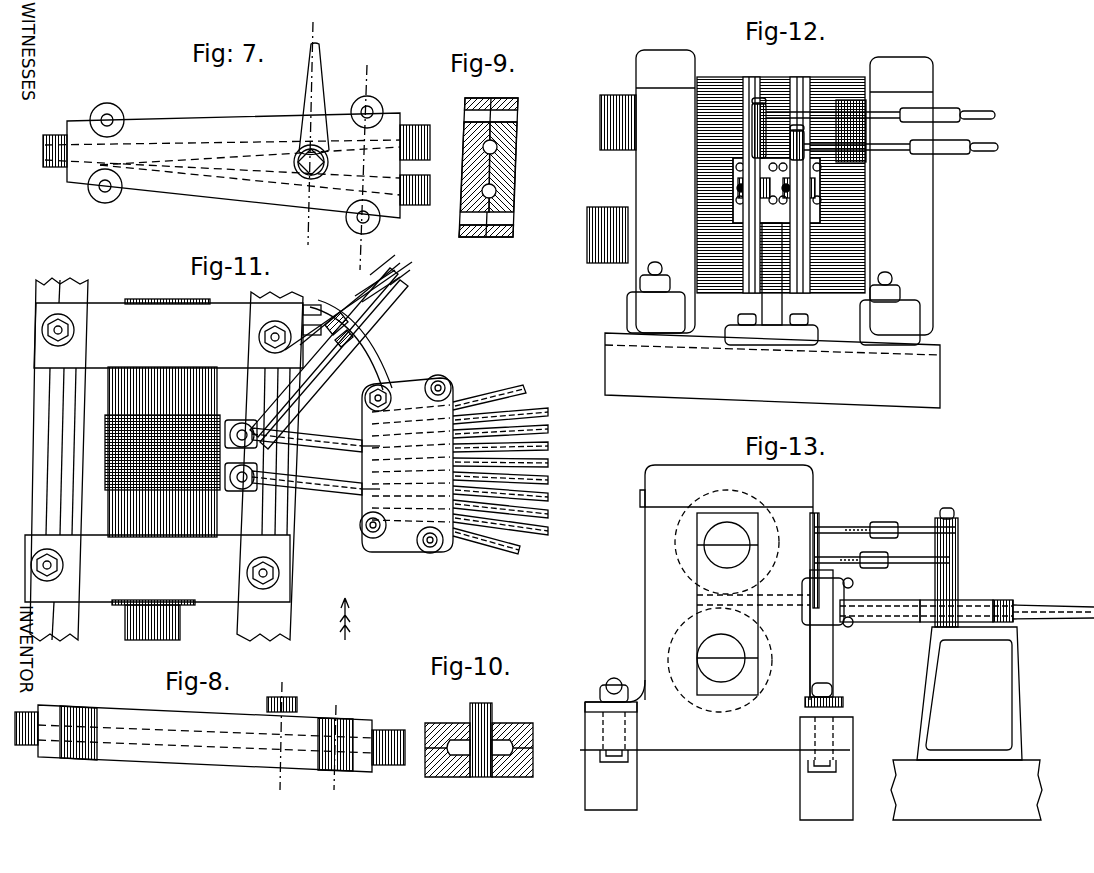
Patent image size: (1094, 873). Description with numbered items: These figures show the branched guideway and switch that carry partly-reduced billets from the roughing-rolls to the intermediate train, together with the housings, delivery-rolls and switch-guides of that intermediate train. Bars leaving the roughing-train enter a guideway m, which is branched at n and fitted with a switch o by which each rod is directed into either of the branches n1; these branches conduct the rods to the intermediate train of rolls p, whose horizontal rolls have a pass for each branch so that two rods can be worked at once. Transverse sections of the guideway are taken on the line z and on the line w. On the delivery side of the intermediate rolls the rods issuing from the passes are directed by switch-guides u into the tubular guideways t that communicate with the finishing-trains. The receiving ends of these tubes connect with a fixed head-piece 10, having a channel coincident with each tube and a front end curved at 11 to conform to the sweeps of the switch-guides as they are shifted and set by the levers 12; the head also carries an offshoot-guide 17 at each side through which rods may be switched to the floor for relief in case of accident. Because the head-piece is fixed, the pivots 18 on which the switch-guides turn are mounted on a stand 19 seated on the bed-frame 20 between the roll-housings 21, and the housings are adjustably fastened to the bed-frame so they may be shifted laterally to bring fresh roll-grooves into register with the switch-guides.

In FIG. 12, the head-piece 10 is at (777, 190).
In FIG. 11, the head-piece 10 is at (404, 400).
In FIG. 13, the head-piece 10 is at (980, 604).
In FIG. 11, the curved front end of head-piece 11 is at (370, 433).
In FIG. 12, the levers 12 is at (945, 112).
In FIG. 11, the levers 12 is at (331, 352).
In FIG. 13, the levers 12 is at (845, 528).
In FIG. 11, the offshoot-guide 17 is at (518, 390).
In FIG. 13, the offshoot-guide 17 is at (1068, 620).
In FIG. 12, the pivots 18 is at (758, 102).
In FIG. 11, the pivots 18 is at (237, 453).
In FIG. 13, the pivots 18 is at (948, 518).
In FIG. 12, the stand 19 is at (771, 284).
In FIG. 11, the stand 19 is at (280, 505).
In FIG. 13, the stand 19 is at (828, 670).
In FIG. 12, the bed-frame 20 is at (772, 370).
In FIG. 11, the bed-frame 20 is at (285, 538).
In FIG. 13, the bed-frame 20 is at (848, 765).
In FIG. 12, the roll-housings 21 is at (780, 197).
In FIG. 11, the roll-housings 21 is at (164, 459).
In FIG. 13, the roll-housings 21 is at (648, 540).
In FIG. 7, the guideway m is at (51, 159).
In FIG. 12, the guideway m is at (611, 179).
In FIG. 8, the guideway m is at (26, 717).
In FIG. 7, the branch n is at (230, 122).
In FIG. 9, the branch n is at (498, 167).
In FIG. 8, the branch n is at (130, 718).
In FIG. 10, the branch n is at (530, 728).
In FIG. 7, the branches of guideway n1 is at (415, 164).
In FIG. 8, the branches of guideway n1 is at (388, 738).
In FIG. 7, the switch o is at (220, 165).
In FIG. 10, the switch o is at (495, 730).
In FIG. 12, the intermediate train of rolls p is at (712, 130).
In FIG. 11, the intermediate train of rolls p is at (155, 375).
In FIG. 13, the intermediate train of rolls p is at (700, 580).
In FIG. 11, the guideways t is at (510, 469).
In FIG. 13, the guideways t is at (1053, 603).
In FIG. 12, the switch-guides u is at (776, 185).
In FIG. 11, the switch-guides u is at (307, 460).
In FIG. 13, the switch-guides u is at (926, 605).
In FIG. 7, the section line w is at (309, 133).
In FIG. 8, the section line w is at (282, 736).
In FIG. 7, the section line z is at (361, 164).
In FIG. 8, the section line z is at (340, 744).